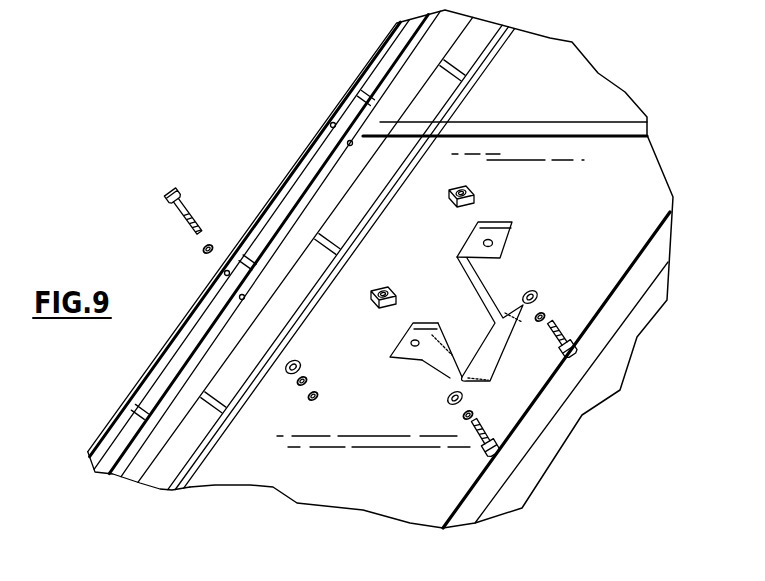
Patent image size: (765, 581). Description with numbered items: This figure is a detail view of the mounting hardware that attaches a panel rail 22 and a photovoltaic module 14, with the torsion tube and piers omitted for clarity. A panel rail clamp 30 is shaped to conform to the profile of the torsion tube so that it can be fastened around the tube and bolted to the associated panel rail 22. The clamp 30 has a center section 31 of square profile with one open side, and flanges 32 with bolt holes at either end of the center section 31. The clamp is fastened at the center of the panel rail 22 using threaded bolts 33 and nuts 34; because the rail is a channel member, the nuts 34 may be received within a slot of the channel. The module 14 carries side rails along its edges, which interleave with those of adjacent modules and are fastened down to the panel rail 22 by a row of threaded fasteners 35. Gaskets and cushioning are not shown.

The photovoltaic module 14 is at (377, 498).
The panel rail 22 is at (203, 431).
The panel rail clamp 30 is at (559, 219).
The center section 31 is at (497, 283).
The flange 32 is at (497, 225).
The threaded bolt 33 is at (553, 327).
The nut 34 is at (442, 208).
The threaded fastener 35 is at (187, 202).